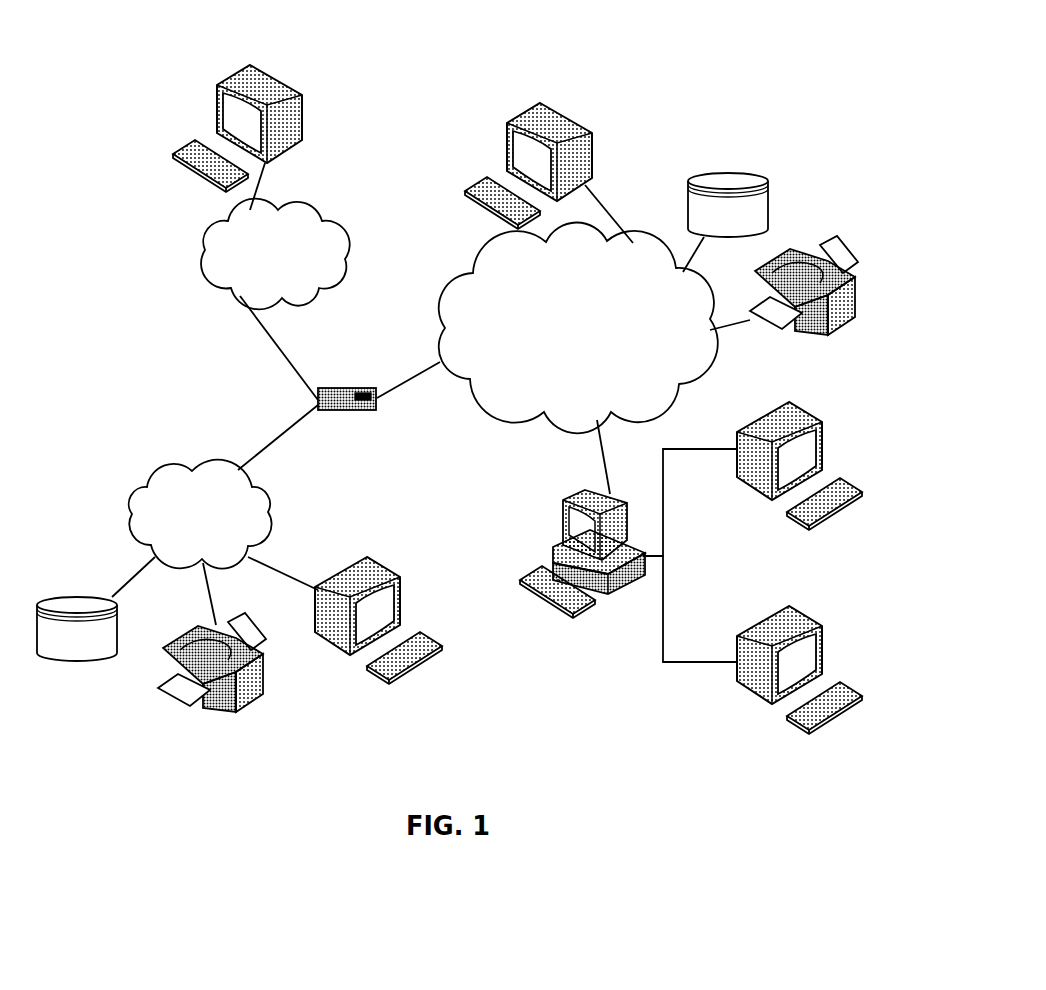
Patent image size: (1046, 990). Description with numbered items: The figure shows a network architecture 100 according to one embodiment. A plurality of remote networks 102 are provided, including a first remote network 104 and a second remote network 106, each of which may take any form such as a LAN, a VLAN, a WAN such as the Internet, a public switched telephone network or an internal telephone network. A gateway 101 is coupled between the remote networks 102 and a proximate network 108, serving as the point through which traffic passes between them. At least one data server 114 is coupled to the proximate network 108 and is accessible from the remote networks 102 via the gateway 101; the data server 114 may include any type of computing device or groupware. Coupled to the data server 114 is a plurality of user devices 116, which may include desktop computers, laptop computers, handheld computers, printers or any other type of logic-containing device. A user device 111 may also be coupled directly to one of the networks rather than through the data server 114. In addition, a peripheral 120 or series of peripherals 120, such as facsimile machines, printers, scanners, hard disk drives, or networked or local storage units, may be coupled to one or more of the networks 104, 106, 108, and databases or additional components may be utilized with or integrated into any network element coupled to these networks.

The network architecture 100 is at (156, 49).
The gateway 101 is at (331, 389).
The remote networks 102 is at (180, 311).
The first remote network 104 is at (133, 491).
The second remote network 106 is at (330, 228).
The proximate network 108 is at (677, 390).
The user device 111 is at (590, 134).
The data server 114 is at (563, 512).
The user devices 116 is at (302, 104).
The peripheral 120 is at (766, 181).